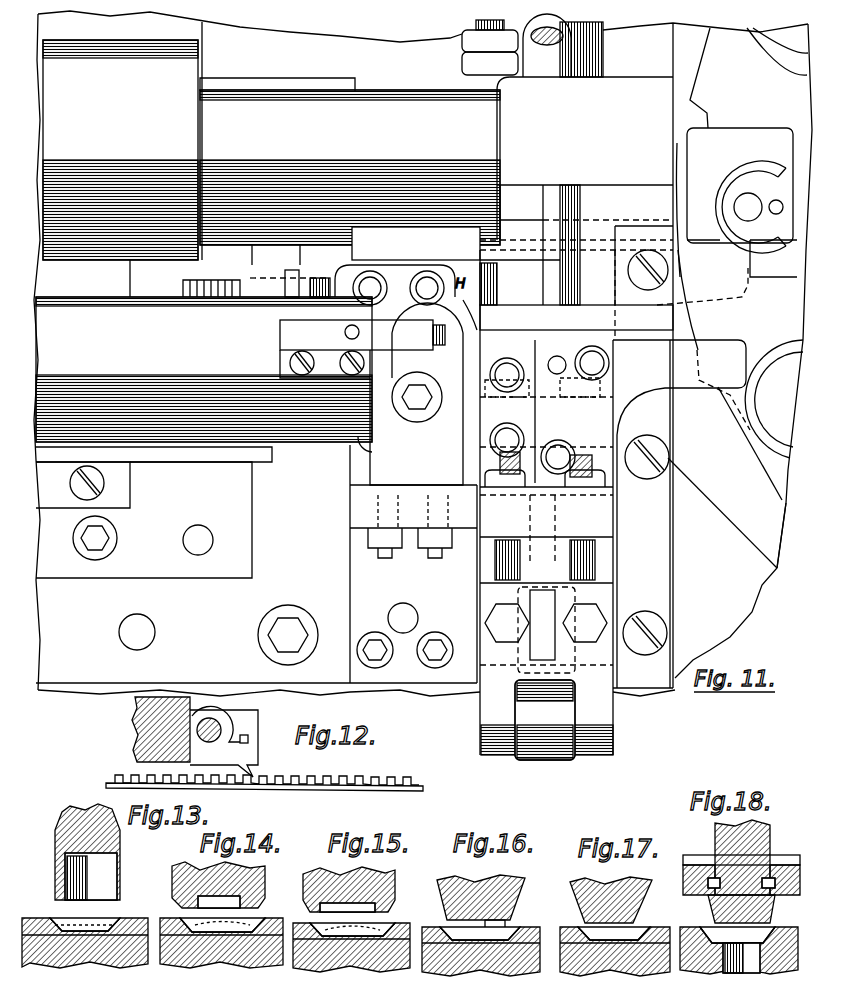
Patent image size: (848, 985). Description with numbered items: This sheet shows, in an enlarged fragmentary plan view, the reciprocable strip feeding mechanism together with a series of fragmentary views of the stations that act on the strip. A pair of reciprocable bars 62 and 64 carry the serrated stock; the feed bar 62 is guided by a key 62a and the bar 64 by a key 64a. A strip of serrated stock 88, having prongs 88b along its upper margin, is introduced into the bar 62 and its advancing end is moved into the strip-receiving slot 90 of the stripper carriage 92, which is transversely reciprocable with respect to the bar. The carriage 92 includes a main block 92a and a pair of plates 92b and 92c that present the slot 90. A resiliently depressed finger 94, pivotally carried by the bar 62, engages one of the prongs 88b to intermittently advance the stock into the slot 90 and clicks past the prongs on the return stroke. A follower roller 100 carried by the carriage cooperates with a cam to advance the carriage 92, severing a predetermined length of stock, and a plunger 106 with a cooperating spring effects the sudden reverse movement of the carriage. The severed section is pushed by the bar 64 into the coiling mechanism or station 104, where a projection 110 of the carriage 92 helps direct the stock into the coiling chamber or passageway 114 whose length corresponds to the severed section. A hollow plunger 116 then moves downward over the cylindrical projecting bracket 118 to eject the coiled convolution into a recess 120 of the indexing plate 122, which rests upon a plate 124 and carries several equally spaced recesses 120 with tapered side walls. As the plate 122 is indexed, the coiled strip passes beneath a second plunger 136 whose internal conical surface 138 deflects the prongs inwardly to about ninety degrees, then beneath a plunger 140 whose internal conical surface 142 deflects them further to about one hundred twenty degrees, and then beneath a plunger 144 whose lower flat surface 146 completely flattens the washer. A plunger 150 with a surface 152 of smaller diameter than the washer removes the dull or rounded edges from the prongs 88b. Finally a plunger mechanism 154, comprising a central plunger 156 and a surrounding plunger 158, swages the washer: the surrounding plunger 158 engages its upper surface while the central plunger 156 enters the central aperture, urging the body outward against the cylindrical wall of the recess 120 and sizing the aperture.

In FIG. 11, the reciprocable bar 62 is at (204, 369).
In FIG. 12, the reciprocable bar 62 is at (143, 728).
In FIG. 11, the key 62a is at (201, 452).
In FIG. 11, the reciprocable bar 64 is at (350, 167).
In FIG. 11, the key 64a is at (279, 86).
In FIG. 12, the strip of serrated stock 88 is at (360, 797).
In FIG. 12, the serrations or prongs 88b is at (334, 776).
In FIG. 11, the strip-receiving slot 90 is at (597, 244).
In FIG. 11, the stripper carriage 92 is at (603, 437).
In FIG. 11, the main block 92a is at (595, 525).
In FIG. 11, the plate 92b is at (547, 411).
In FIG. 11, the plate 92c is at (576, 317).
In FIG. 12, the resiliently depressed finger 94 is at (251, 772).
In FIG. 11, the follower roller 100 is at (552, 742).
In FIG. 11, the coiling mechanism or station 104 is at (784, 291).
In FIG. 11, the plunger 106 is at (552, 203).
In FIG. 11, the projection 110 is at (703, 417).
In FIG. 11, the coiling chamber or passageway 114 is at (713, 182).
In FIG. 13, the hollow plunger 116 is at (64, 832).
In FIG. 11, the cylindrical projecting bracket 118 is at (744, 184).
In FIG. 11, the recess 120 is at (784, 46).
In FIG. 13, the recess 120 is at (104, 922).
In FIG. 18, the recess 120 is at (760, 930).
In FIG. 11, the indexing plate 122 is at (773, 470).
In FIG. 13, the indexing plate 122 is at (36, 918).
In FIG. 11, the plate 124 is at (763, 535).
In FIG. 14, the second plunger 136 is at (262, 876).
In FIG. 14, the internal conical surface 138 is at (235, 914).
In FIG. 15, the plunger 140 is at (393, 882).
In FIG. 15, the internal conical surface 142 is at (370, 916).
In FIG. 16, the plunger 144 is at (520, 886).
In FIG. 16, the lower flat surface 146 is at (510, 924).
In FIG. 17, the plunger 150 is at (640, 900).
In FIG. 17, the surface 152 is at (620, 930).
In FIG. 18, the plunger mechanism 154 is at (784, 842).
In FIG. 18, the central plunger 156 is at (718, 840).
In FIG. 18, the surrounding plunger 158 is at (708, 882).